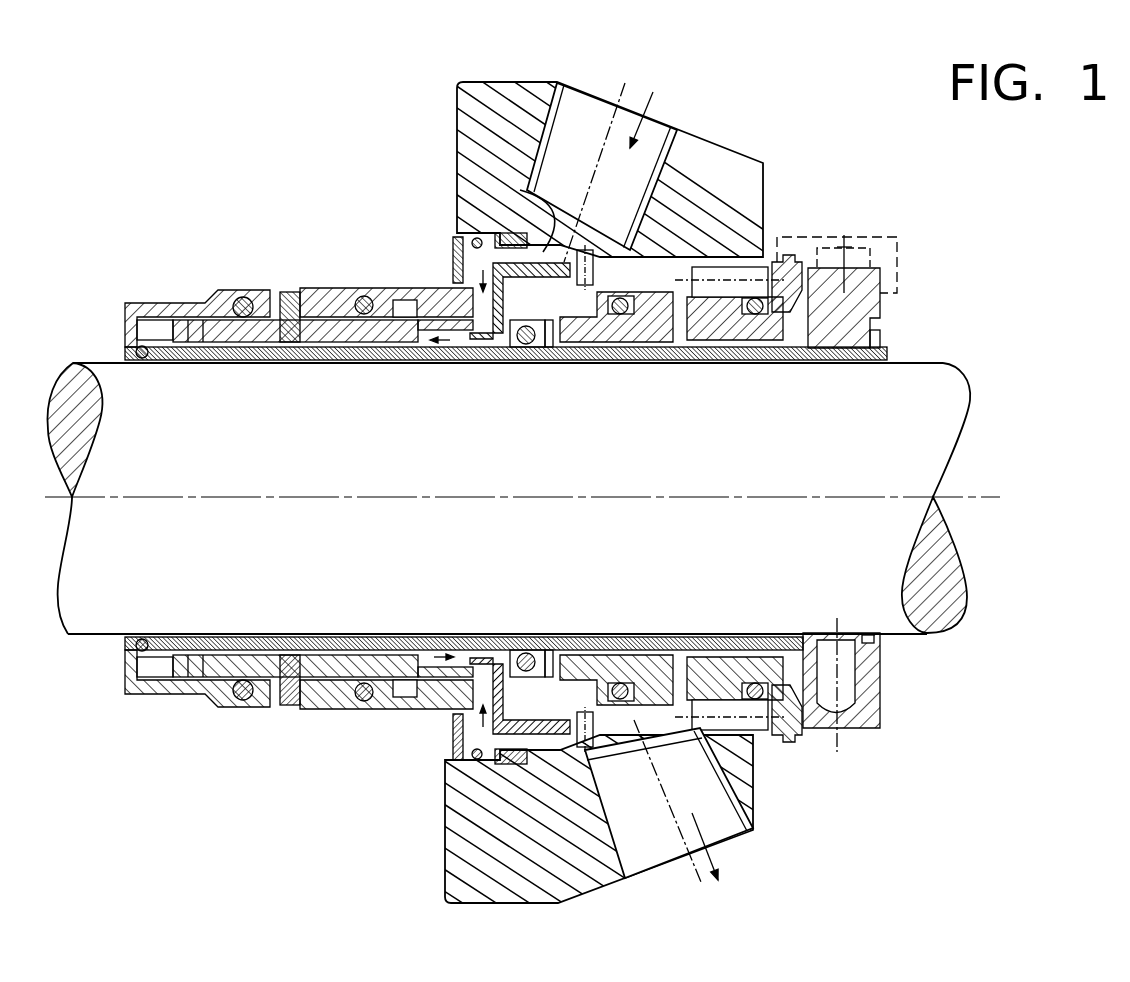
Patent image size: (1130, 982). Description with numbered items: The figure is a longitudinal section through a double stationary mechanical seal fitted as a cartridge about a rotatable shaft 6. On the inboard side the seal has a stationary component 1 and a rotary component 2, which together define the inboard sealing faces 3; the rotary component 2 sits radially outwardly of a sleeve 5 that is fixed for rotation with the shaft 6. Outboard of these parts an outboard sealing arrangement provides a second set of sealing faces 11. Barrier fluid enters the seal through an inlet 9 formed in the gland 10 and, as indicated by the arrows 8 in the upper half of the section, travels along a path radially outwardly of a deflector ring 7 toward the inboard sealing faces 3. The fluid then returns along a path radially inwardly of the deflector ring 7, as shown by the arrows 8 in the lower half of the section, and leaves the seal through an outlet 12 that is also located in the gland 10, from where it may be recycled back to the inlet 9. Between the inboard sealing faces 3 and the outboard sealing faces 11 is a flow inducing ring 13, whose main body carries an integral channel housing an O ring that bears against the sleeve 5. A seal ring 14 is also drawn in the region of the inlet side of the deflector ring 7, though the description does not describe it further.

The stationary component 1 is at (330, 290).
The rotary component 2 is at (280, 292).
The sealing faces 3 is at (300, 290).
The sleeve 5 is at (257, 360).
The rotatable shaft 6 is at (948, 362).
The deflector ring 7 is at (475, 335).
The flow direction arrows 8 is at (655, 100).
The inlet 9 is at (661, 136).
The gland 10 is at (668, 248).
The sealing faces 11 is at (673, 320).
The outlet 12 is at (703, 785).
The flow inducing ring 13 is at (557, 330).
The seal ring 14 is at (523, 175).